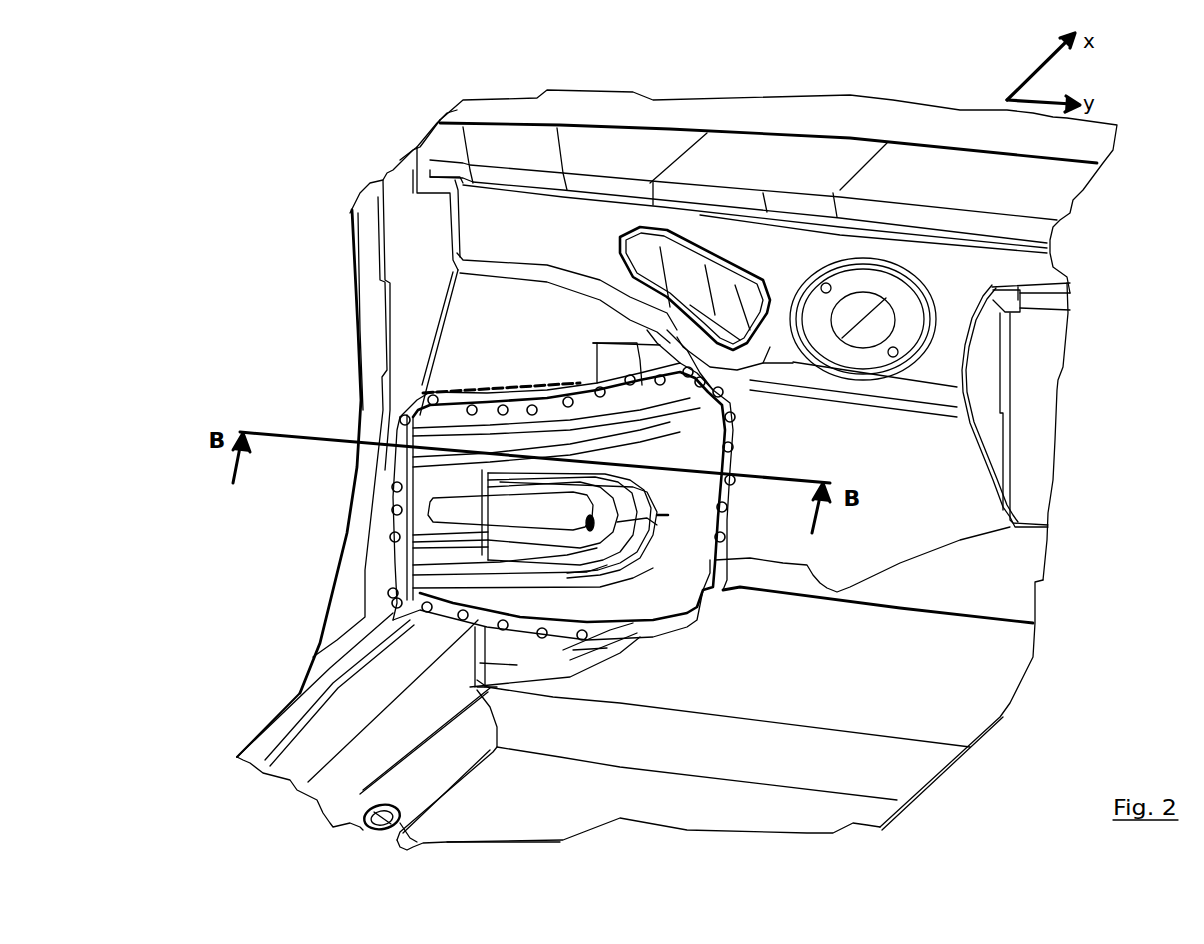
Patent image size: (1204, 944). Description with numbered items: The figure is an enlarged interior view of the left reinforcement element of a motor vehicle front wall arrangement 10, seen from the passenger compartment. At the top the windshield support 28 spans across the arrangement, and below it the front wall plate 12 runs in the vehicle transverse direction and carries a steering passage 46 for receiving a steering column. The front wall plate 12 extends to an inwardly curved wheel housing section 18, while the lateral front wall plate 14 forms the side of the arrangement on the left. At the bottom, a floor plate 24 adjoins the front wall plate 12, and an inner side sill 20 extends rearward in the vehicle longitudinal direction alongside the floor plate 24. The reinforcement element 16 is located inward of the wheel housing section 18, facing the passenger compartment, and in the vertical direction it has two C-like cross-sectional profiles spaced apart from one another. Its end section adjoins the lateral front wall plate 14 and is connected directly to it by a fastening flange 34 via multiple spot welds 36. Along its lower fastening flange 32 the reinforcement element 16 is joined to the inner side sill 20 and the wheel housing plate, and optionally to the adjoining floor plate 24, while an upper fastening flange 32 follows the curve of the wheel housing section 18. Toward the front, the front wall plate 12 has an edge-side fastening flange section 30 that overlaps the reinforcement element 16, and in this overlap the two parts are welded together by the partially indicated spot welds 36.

The motor vehicle front wall arrangement 10 is at (1034, 784).
The front wall plate 12 is at (968, 512).
The lateral front wall plate 14 is at (372, 237).
The reinforcement element 16 is at (490, 620).
The wheel housing section 18 is at (450, 354).
The inner side sill 20 is at (302, 768).
The floor plate 24 is at (510, 797).
The windshield support 28 is at (653, 112).
The edge-side fastening flange section 30 is at (727, 463).
The fastening flange 32 is at (548, 392).
The fastening flange 34 is at (397, 472).
The spot welds 36 is at (503, 397).
The steering passage 46 is at (697, 277).